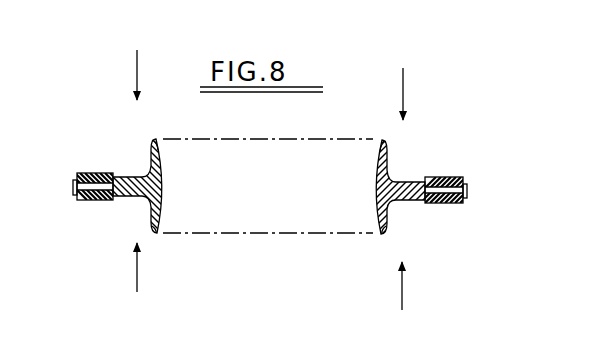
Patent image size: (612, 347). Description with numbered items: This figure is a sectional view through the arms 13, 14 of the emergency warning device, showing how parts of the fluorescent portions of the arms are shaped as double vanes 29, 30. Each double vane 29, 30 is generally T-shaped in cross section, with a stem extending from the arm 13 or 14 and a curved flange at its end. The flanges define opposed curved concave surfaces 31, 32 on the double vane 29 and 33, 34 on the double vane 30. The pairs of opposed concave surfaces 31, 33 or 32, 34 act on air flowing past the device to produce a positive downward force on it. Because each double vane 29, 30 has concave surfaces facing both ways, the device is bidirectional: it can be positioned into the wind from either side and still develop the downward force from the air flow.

The arm 13 is at (90, 203).
The arm 14 is at (449, 208).
The double vane 29 is at (160, 187).
The double vane 30 is at (378, 196).
The curved concave surface 31 is at (147, 229).
The curved concave surface 32 is at (151, 151).
The curved concave surface 33 is at (385, 231).
The curved concave surface 34 is at (389, 168).